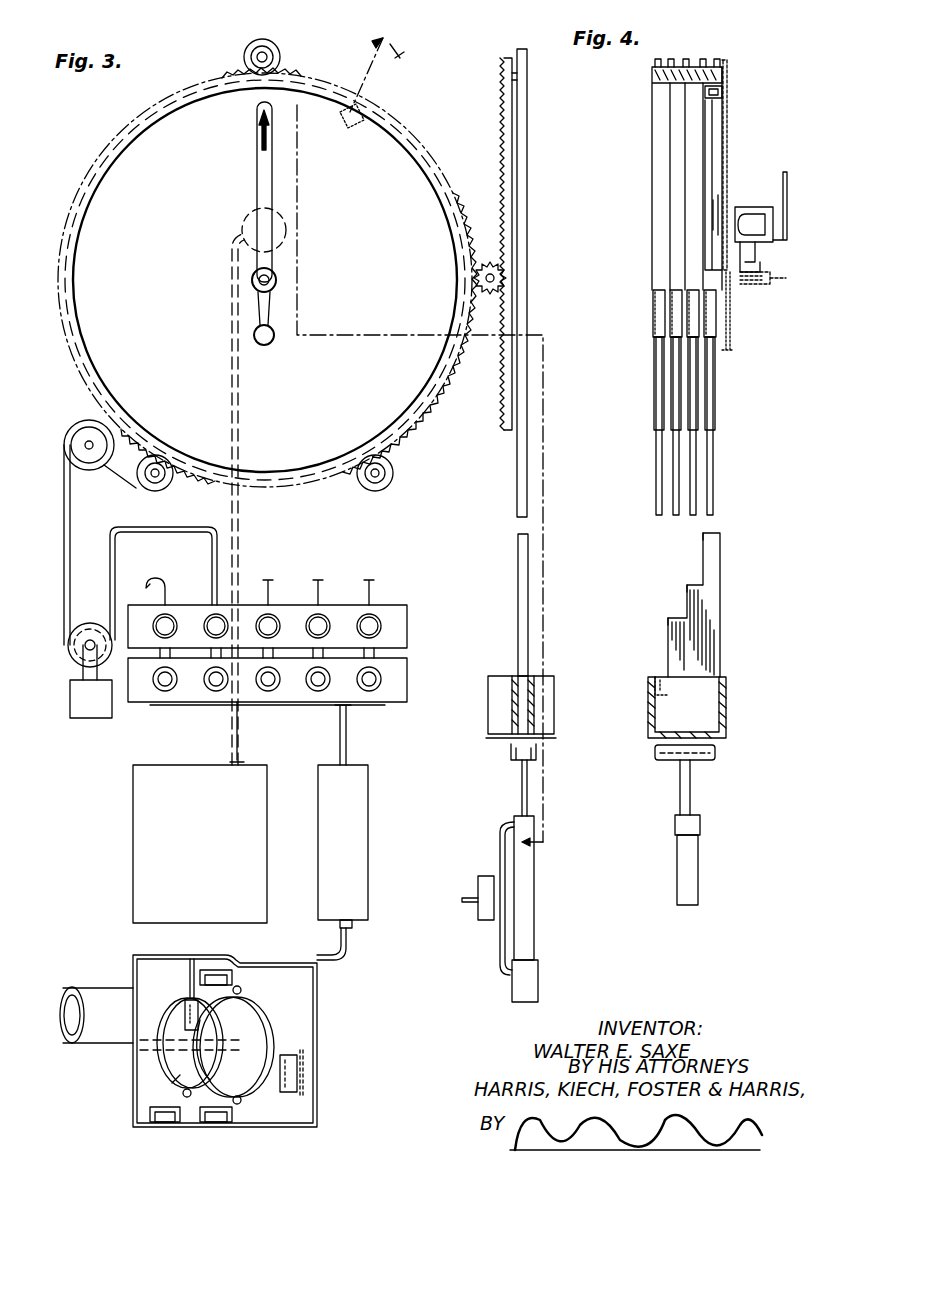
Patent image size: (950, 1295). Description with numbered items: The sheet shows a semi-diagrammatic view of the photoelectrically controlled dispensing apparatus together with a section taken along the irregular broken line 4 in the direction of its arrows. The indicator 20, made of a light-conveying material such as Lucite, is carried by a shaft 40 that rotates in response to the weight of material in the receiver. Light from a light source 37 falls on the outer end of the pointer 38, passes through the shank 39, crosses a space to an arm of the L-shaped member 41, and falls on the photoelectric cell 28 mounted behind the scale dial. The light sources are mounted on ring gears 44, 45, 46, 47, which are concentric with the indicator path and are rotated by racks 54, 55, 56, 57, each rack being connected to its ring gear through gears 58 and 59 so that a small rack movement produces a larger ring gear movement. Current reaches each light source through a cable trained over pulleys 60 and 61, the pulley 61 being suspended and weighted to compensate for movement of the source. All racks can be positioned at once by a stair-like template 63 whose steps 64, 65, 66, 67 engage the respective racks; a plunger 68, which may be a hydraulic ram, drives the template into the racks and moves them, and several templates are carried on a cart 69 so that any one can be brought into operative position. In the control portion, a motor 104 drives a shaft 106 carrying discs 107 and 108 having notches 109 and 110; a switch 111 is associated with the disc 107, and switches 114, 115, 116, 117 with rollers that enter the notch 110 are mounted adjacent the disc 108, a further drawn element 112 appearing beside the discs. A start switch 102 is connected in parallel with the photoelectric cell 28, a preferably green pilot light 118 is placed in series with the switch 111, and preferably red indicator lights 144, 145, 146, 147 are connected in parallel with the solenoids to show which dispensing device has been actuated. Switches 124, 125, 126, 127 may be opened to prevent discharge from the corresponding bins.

In FIG. 3, the broken line 4— 4 is at (439, 449).
In FIG. 4, the indicator 20 is at (850, 100).
In FIG. 4, the photoelectric cell 28 is at (752, 212).
In FIG. 4, the light source 37 is at (722, 92).
In FIG. 4, the pointer 38 is at (713, 195).
In FIG. 4, the shank 39 is at (730, 315).
In FIG. 4, the shaft 40 is at (762, 282).
In FIG. 4, the L-shaped member 41 is at (760, 265).
In FIG. 3, the ring gear 44 is at (456, 143).
In FIG. 4, the ring gear 44 is at (652, 82).
In FIG. 4, the ring gear 45 is at (670, 115).
In FIG. 4, the ring gear 46 is at (687, 135).
In FIG. 4, the ring gear 47 is at (720, 66).
In FIG. 3, the rack 54 is at (527, 222).
In FIG. 4, the rack 54 is at (656, 395).
In FIG. 4, the rack 55 is at (673, 415).
In FIG. 4, the rack 56 is at (697, 420).
In FIG. 4, the rack 57 is at (715, 395).
In FIG. 3, the gear 58 is at (494, 283).
In FIG. 3, the gear 59 is at (498, 260).
In FIG. 3, the pulley 60 is at (100, 465).
In FIG. 3, the pulley 61 is at (70, 650).
In FIG. 3, the template 63 is at (528, 624).
In FIG. 4, the template 63 is at (720, 650).
In FIG. 4, the step 64 is at (655, 690).
In FIG. 4, the step 65 is at (669, 618).
In FIG. 4, the step 66 is at (688, 585).
In FIG. 4, the step 67 is at (704, 533).
In FIG. 3, the plunger 68 is at (527, 795).
In FIG. 4, the plunger 68 is at (690, 808).
In FIG. 3, the cart 69 is at (554, 690).
In FIG. 4, the cart 69 is at (726, 705).
In FIG. 3, the start switch 102 is at (170, 622).
In FIG. 3, the motor 104 is at (88, 1040).
In FIG. 3, the shaft 106 is at (165, 1065).
In FIG. 3, the disc 107 is at (168, 1083).
In FIG. 3, the disc 108 is at (255, 1080).
In FIG. 3, the notch 109 is at (200, 1080).
In FIG. 3, the notch 110 is at (205, 1032).
In FIG. 3, the switch 111 is at (165, 1122).
In FIG. 3, the contact roller 112 is at (187, 1097).
In FIG. 3, the switch 114 is at (232, 978).
In FIG. 3, the switch 115 is at (297, 1078).
In FIG. 3, the switch 116 is at (222, 1122).
In FIG. 3, the switch 117 is at (185, 1005).
In FIG. 3, the pilot light 118 is at (160, 685).
In FIG. 3, the switch 124 is at (216, 625).
In FIG. 3, the switch 125 is at (268, 625).
In FIG. 3, the switch 126 is at (318, 625).
In FIG. 3, the switch 127 is at (369, 625).
In FIG. 3, the indicator light 144 is at (213, 685).
In FIG. 3, the indicator light 145 is at (268, 685).
In FIG. 3, the indicator light 146 is at (318, 685).
In FIG. 3, the indicator light 147 is at (369, 685).